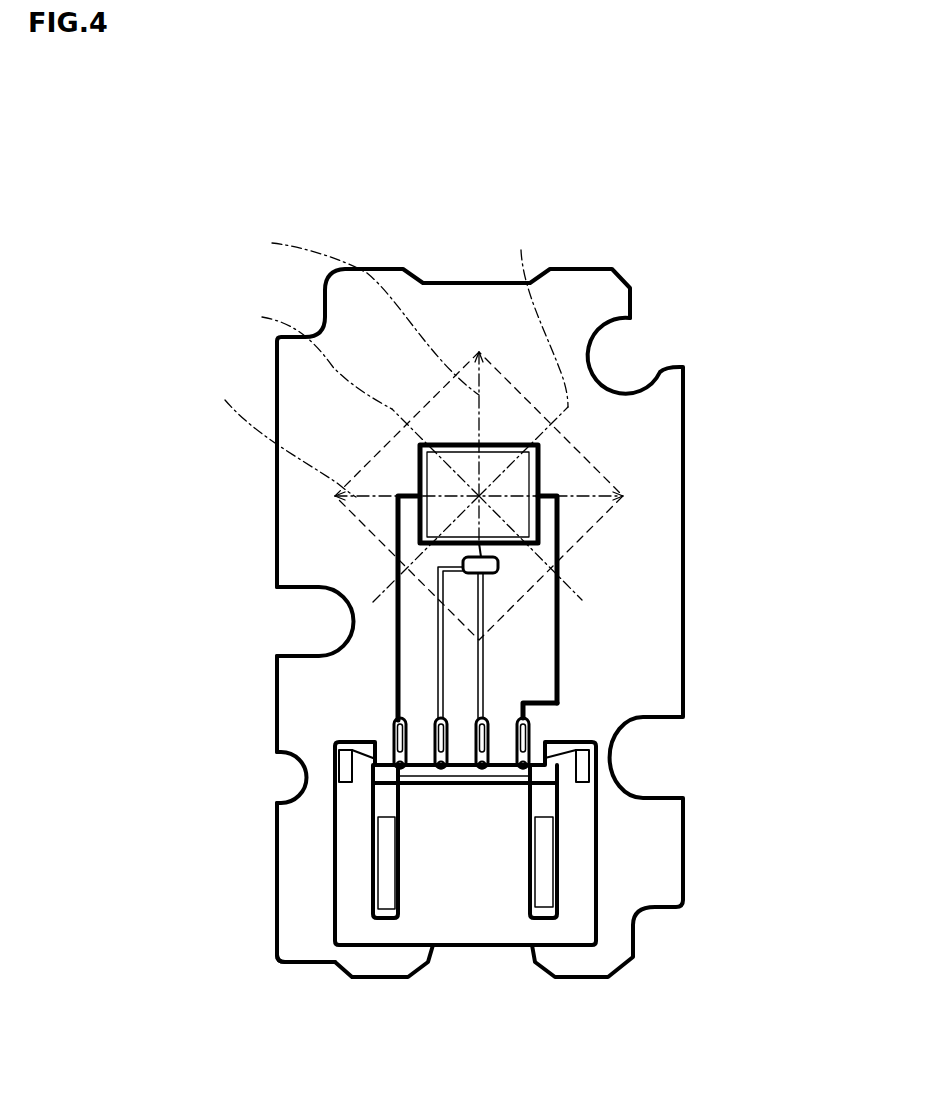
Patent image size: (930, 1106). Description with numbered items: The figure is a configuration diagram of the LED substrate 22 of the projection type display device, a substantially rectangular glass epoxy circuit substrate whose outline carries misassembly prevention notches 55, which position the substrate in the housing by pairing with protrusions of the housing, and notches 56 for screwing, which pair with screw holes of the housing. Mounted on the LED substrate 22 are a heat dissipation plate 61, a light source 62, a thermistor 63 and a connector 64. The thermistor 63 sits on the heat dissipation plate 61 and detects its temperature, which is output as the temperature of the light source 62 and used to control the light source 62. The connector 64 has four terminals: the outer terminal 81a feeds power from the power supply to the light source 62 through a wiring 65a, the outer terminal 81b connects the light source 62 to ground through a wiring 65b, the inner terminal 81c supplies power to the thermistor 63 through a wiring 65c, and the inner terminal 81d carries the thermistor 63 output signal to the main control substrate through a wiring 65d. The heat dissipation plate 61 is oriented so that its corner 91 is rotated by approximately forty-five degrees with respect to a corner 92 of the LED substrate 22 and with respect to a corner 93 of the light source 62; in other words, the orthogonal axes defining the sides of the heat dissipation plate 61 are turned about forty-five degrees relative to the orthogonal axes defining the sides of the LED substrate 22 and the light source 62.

The LED substrate 22 is at (666, 191).
The misassembly prevention notch 55 is at (292, 787).
The notch for screwing 56 is at (596, 376).
The heat dissipation plate 61 is at (587, 532).
The light source 62 is at (540, 472).
The thermistor 63 is at (498, 570).
The connector 64 is at (598, 860).
The wiring 65a is at (396, 608).
The wiring 65b is at (558, 690).
The wiring 65c is at (440, 685).
The wiring 65d is at (483, 650).
The terminal 81a is at (395, 737).
The terminal 81b is at (527, 728).
The terminal 81c is at (433, 728).
The terminal 81d is at (490, 727).
The corner of heat dissipation plate 91 is at (480, 340).
The corner of LED substrate 92 is at (283, 957).
The corner of light source 93 is at (540, 449).